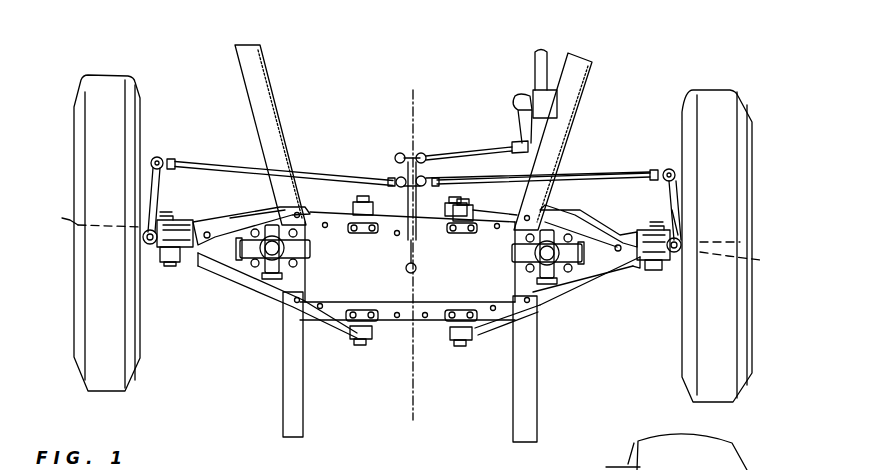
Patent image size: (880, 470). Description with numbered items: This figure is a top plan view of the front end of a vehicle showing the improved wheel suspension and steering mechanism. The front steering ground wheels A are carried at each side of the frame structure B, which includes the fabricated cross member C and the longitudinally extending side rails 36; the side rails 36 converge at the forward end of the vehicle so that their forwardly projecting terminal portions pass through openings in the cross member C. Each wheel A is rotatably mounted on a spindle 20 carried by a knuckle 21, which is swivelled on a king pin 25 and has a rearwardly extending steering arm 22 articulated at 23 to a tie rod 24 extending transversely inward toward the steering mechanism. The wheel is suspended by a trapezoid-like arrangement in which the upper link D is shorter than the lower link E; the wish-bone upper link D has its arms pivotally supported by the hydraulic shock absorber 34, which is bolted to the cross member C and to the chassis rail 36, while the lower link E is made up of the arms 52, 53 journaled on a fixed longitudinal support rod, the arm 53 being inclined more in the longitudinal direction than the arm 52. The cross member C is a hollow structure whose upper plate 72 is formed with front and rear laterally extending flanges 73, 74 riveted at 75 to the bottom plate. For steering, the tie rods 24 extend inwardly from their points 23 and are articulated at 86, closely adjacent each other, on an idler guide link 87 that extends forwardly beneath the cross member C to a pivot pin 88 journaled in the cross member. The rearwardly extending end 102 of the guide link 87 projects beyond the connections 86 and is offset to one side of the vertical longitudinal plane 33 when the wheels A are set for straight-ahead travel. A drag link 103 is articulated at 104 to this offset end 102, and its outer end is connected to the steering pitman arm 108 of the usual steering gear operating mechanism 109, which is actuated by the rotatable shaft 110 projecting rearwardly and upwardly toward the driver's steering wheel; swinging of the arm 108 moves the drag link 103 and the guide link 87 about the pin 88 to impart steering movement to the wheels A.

The front steering ground wheels A is at (117, 105).
The frame structure B is at (280, 96).
The cross member C is at (421, 310).
The upper link D is at (200, 265).
The lower link E is at (183, 219).
The spindle 20 is at (409, 241).
The knuckle 21 is at (683, 230).
The steering arm 22 is at (157, 190).
The articulation 23 is at (162, 160).
The tie rod 24 is at (309, 172).
The king pin 25 is at (672, 258).
The vertical plane 33 is at (412, 393).
The hydraulic shock absorber 34 is at (310, 251).
The side rails 36 is at (568, 118).
The arm 52 is at (506, 198).
The arm 53 is at (470, 340).
The upper plate 72 is at (335, 315).
The front flange 73 is at (390, 322).
The rear flange 74 is at (379, 224).
The rivets 75 is at (427, 233).
The tie rod articulations 86 is at (395, 178).
The idler guide link 87 is at (407, 250).
The pivot pin 88 is at (416, 268).
The rearwardly extending end 102 is at (528, 165).
The drag link 103 is at (472, 140).
The articulation 104 is at (401, 153).
The steering pitman arm 108 is at (520, 127).
The steering gear operating mechanism 109 is at (533, 97).
The rotatable shaft 110 is at (536, 50).